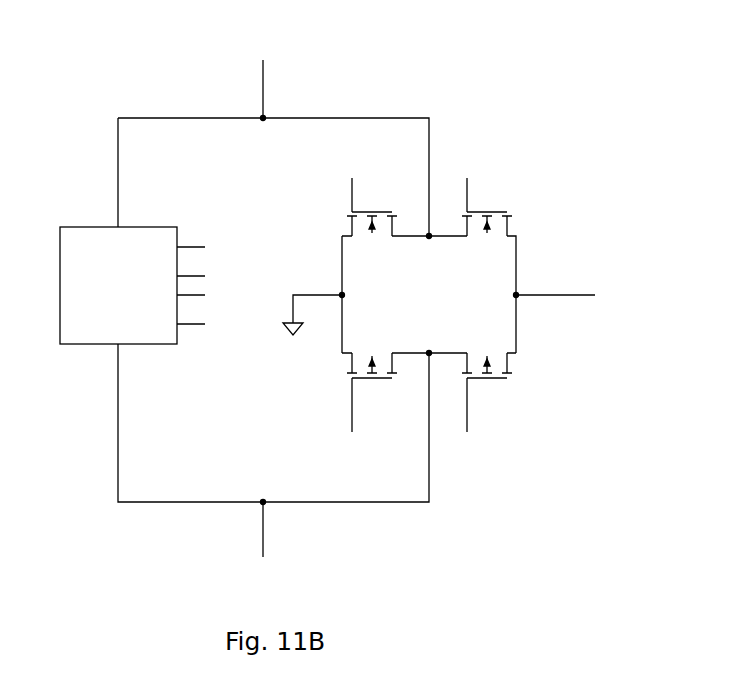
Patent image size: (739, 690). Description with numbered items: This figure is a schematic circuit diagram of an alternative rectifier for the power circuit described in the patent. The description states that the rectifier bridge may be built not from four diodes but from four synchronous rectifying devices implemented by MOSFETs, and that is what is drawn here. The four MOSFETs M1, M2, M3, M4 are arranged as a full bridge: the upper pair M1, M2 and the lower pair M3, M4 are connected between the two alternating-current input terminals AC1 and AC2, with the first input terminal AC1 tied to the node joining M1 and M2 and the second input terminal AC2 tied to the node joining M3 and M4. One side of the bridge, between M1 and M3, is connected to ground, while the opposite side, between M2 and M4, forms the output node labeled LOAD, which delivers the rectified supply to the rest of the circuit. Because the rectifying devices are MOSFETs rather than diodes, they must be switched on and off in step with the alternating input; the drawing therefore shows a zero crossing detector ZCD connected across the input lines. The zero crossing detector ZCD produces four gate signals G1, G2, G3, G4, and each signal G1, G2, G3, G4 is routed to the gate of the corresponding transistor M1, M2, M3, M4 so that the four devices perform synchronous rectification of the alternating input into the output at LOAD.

The AC input terminal 1 AC1 is at (263, 75).
The AC input terminal 2 AC2 is at (263, 545).
The zero crossing detector ZCD is at (141, 285).
The gate signal 1 G1 is at (352, 184).
The gate signal 2 G2 is at (467, 184).
The gate signal 3 G3 is at (352, 415).
The gate signal 4 G4 is at (467, 415).
The transistor M1 is at (372, 238).
The transistor M2 is at (487, 238).
The transistor M3 is at (372, 354).
The transistor M4 is at (487, 353).
The load terminal LOAD is at (572, 295).